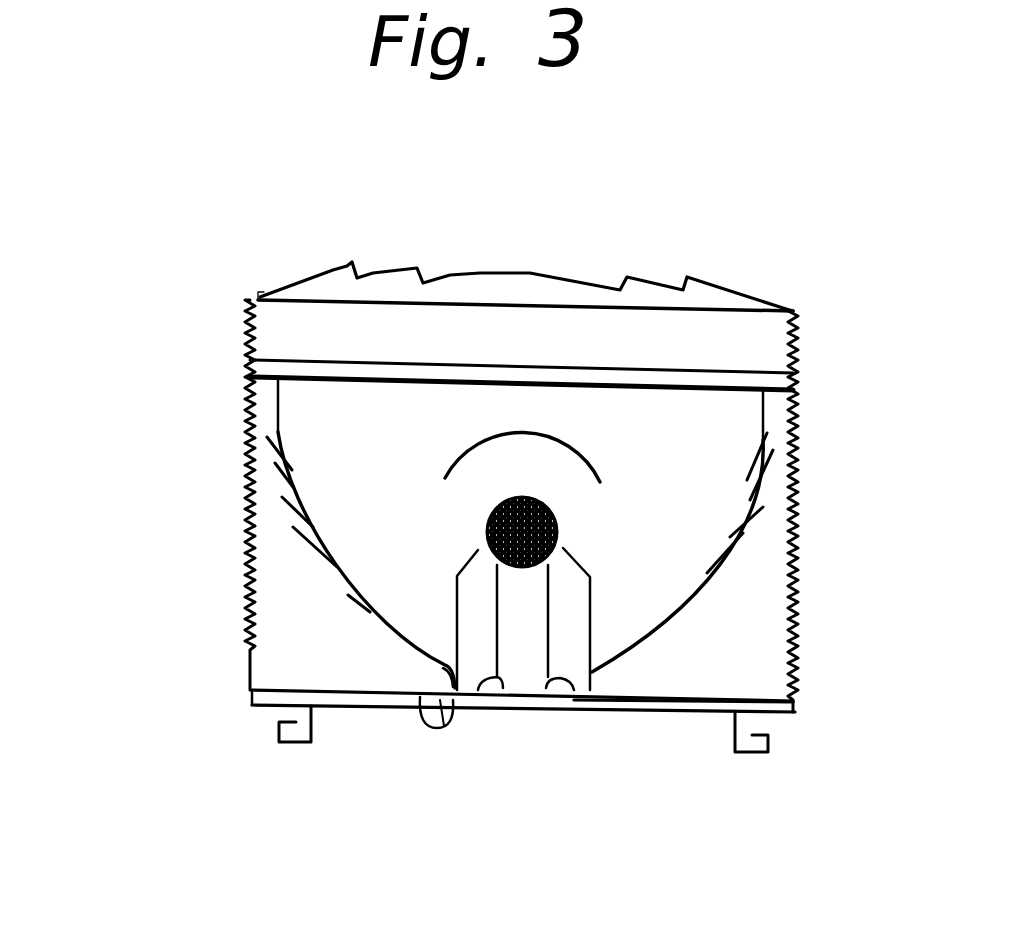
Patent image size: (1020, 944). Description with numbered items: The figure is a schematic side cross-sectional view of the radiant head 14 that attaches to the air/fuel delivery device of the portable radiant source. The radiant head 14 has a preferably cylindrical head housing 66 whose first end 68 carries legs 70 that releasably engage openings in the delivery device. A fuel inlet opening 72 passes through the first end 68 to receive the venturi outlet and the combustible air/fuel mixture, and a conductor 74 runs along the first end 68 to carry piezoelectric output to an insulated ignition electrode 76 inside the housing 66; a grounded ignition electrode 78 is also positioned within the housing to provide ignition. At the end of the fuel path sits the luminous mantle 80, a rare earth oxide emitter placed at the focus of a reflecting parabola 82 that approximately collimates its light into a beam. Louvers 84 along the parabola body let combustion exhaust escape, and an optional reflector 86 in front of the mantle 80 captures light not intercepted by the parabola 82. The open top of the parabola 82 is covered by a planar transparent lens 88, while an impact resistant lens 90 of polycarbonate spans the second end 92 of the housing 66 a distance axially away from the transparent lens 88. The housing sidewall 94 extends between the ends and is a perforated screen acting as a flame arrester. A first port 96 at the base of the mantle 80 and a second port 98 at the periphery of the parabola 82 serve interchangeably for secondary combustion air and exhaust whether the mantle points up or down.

The radiant head 14 is at (307, 225).
The head housing 66 is at (214, 672).
The first end 68 is at (617, 715).
The legs 70 is at (290, 742).
The fuel inlet opening 72 is at (522, 700).
The conductor 74 is at (435, 715).
The ignition electrode 76 is at (457, 598).
The grounded ignition electrode 78 is at (580, 560).
The luminous mantle 80 is at (492, 512).
The reflecting parabola 82 is at (720, 623).
The louvers 84 is at (753, 525).
The reflector 86 is at (548, 432).
The transparent lens 88 is at (482, 377).
The impact resistant lens 90 is at (347, 267).
The second end 92 is at (262, 297).
The housing sidewall 94 is at (798, 435).
The first port 96 is at (400, 692).
The second port 98 is at (768, 410).